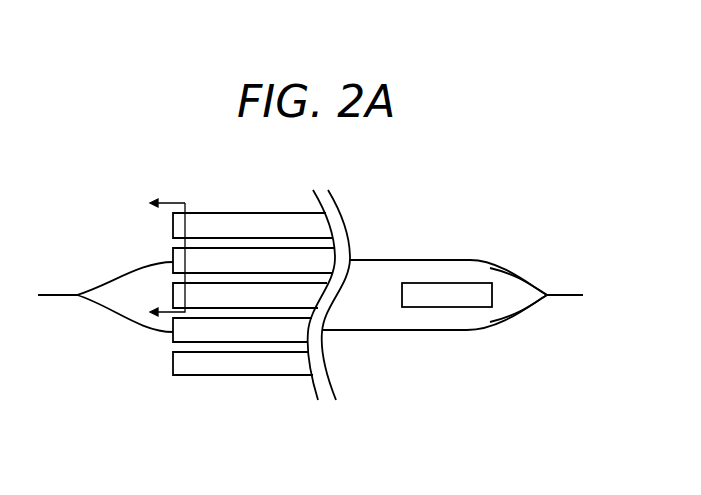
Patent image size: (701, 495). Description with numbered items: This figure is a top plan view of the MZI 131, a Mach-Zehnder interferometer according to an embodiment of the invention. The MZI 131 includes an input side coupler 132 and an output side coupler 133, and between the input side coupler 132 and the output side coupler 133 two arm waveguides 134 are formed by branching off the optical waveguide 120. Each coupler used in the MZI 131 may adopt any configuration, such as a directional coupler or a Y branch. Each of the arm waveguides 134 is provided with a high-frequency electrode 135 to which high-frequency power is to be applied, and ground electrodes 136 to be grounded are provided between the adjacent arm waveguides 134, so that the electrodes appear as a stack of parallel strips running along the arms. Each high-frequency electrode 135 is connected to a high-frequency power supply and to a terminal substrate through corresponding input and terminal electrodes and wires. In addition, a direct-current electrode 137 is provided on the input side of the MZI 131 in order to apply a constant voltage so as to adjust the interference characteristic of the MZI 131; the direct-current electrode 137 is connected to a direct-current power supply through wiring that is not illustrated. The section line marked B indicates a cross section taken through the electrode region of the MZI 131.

The MZI 131 is at (78, 170).
The output side coupler 133 is at (77, 298).
The ground electrodes 136 is at (207, 362).
The high-frequency electrode 135 is at (273, 263).
The arm waveguides 134 is at (365, 328).
The direct-current electrode 137 is at (453, 305).
The input side coupler 132 is at (528, 307).
The optical waveguide 120 is at (567, 292).
The section line B- B is at (159, 257).